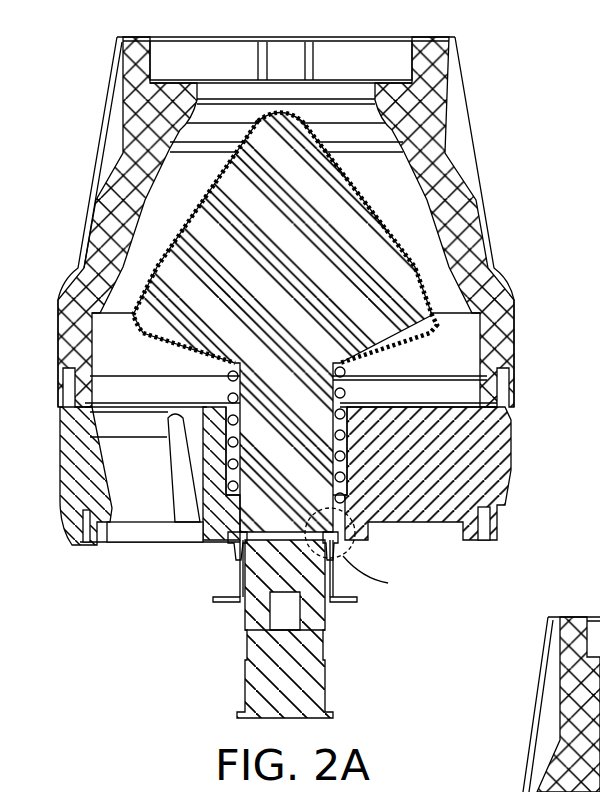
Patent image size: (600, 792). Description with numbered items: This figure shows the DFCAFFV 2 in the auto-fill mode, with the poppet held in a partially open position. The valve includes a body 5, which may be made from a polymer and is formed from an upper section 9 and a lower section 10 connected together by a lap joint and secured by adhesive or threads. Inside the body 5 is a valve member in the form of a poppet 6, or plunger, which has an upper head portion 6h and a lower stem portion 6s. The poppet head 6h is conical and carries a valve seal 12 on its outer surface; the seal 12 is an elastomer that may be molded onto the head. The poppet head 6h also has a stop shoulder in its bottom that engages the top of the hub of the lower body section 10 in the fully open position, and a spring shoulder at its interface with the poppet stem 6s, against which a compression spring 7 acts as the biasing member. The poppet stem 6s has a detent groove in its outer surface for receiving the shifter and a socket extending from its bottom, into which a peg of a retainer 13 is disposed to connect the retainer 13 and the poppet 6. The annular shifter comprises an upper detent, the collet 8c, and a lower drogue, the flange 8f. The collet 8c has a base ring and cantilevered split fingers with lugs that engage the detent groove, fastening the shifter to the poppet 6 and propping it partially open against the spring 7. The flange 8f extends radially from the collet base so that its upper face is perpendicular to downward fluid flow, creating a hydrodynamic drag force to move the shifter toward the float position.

In FIG. 2A, the DFCAFFV 2 is at (90, 50).
In FIG. 2B, the DFCAFFV 2 is at (563, 594).
In FIG. 2A, the body 5 is at (503, 338).
In FIG. 2A, the upper section 9 is at (120, 145).
In FIG. 2B, the upper section 9 is at (560, 722).
In FIG. 2A, the valve seal 12 is at (286, 115).
In FIG. 2A, the upper head portion 6h is at (232, 185).
In FIG. 2A, the poppet 6 is at (163, 330).
In FIG. 2A, the lower stem portion 6s is at (243, 614).
In FIG. 2A, the compression spring 7 is at (200, 477).
In FIG. 2A, the lower section 10 is at (75, 493).
In FIG. 2A, the collet 8c is at (238, 541).
In FIG. 2A, the flange 8f is at (343, 600).
In FIG. 2A, the retainer 13 is at (310, 687).